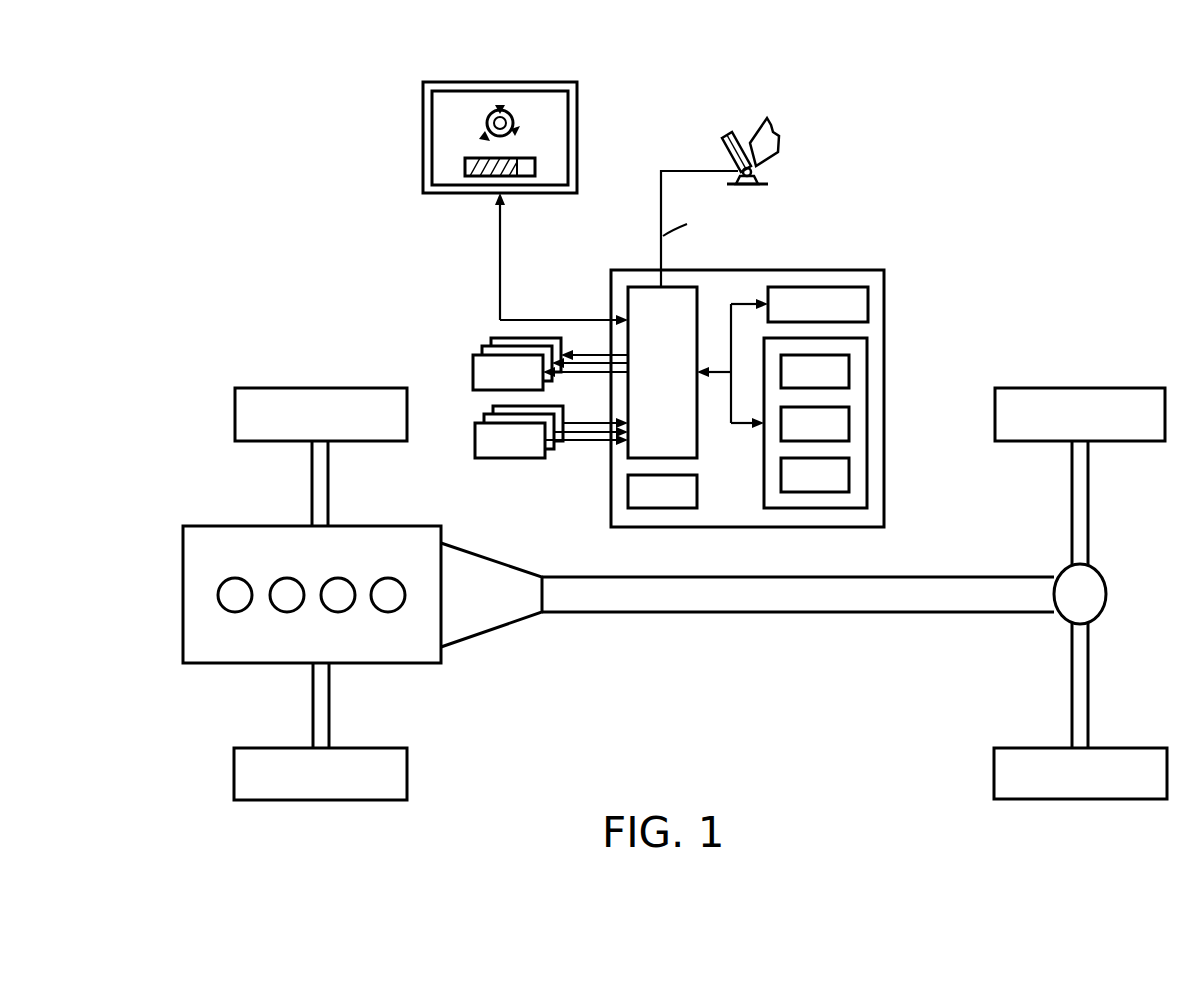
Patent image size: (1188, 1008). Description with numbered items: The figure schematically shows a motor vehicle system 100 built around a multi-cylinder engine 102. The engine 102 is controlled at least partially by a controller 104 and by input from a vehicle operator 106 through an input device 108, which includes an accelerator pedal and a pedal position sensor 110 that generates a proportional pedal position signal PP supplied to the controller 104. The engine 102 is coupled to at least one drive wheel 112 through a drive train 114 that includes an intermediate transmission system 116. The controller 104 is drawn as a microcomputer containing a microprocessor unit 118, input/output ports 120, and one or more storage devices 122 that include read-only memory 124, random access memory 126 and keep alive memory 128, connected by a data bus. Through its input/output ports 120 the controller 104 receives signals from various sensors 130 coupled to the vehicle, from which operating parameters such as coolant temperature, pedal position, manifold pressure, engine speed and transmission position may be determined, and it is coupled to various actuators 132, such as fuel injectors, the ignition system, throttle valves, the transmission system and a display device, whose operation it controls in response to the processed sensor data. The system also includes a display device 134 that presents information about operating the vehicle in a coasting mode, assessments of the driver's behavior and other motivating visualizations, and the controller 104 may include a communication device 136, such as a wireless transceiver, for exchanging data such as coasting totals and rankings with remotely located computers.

The motor vehicle system 100 is at (992, 74).
The multi-cylinder engine 102 is at (363, 526).
The controller 104 is at (802, 270).
The vehicle operator 106 is at (776, 136).
The input device 108 is at (735, 150).
The pedal position sensor 110 is at (758, 172).
The drive wheel 112 is at (1085, 388).
The drive train 114 is at (618, 678).
The transmission system 116 is at (493, 560).
The microprocessor unit 118 is at (884, 298).
The input/output ports 120 is at (697, 299).
The storage devices 122 is at (858, 338).
The read-only memory 124 is at (849, 372).
The random access memory 126 is at (849, 423).
The keep alive memory 128 is at (849, 472).
The sensors 130 is at (551, 432).
The actuators 132 is at (550, 364).
The display device 134 is at (498, 81).
The communication device 136 is at (697, 478).